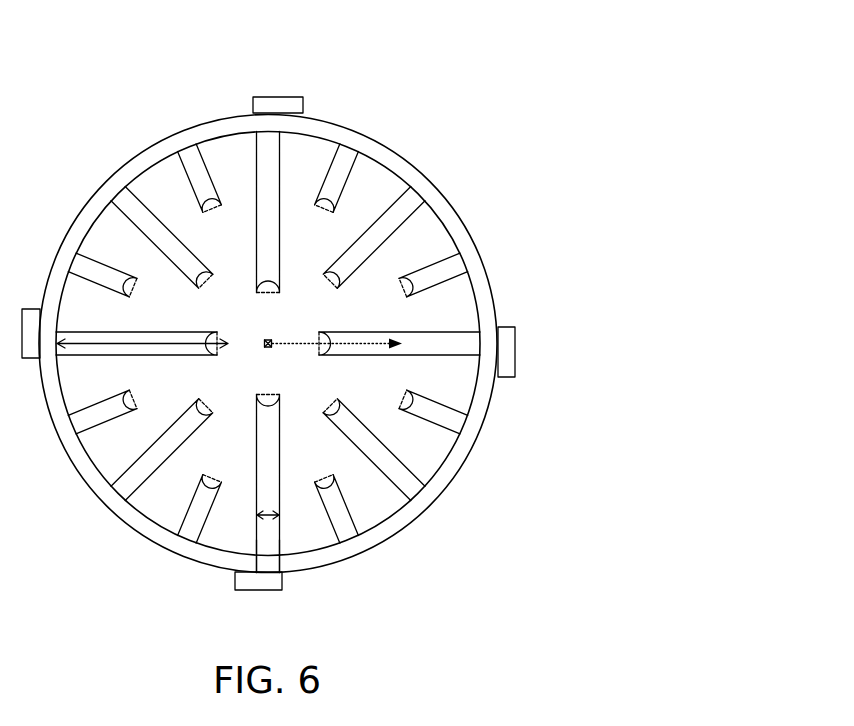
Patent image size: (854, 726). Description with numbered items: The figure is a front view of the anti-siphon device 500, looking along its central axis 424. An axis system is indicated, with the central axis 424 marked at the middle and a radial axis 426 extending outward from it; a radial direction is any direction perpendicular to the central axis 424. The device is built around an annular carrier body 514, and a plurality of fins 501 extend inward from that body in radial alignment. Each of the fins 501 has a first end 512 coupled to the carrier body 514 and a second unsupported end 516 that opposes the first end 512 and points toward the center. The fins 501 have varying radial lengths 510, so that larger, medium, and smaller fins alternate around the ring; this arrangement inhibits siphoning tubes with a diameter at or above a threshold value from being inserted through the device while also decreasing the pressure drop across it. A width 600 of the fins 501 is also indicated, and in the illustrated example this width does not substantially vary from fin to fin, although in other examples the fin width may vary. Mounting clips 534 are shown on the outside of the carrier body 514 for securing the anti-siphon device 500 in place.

The anti-siphon device 500 is at (523, 58).
The mounting clips 534 is at (240, 104).
The radial length 510 is at (97, 338).
The central axis 424 is at (264, 334).
The radial axis 426 is at (288, 340).
The first end 512 is at (248, 394).
The fins 501 is at (241, 350).
The width 600 is at (269, 506).
The second unsupported end 516 is at (286, 562).
The carrier body 514 is at (286, 321).